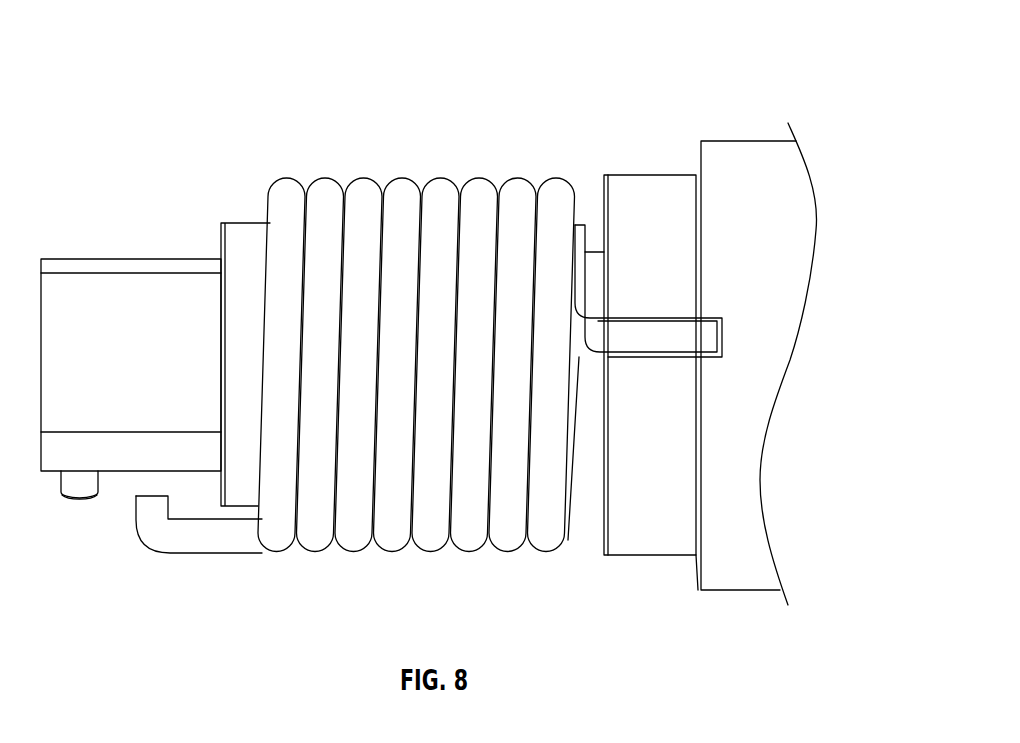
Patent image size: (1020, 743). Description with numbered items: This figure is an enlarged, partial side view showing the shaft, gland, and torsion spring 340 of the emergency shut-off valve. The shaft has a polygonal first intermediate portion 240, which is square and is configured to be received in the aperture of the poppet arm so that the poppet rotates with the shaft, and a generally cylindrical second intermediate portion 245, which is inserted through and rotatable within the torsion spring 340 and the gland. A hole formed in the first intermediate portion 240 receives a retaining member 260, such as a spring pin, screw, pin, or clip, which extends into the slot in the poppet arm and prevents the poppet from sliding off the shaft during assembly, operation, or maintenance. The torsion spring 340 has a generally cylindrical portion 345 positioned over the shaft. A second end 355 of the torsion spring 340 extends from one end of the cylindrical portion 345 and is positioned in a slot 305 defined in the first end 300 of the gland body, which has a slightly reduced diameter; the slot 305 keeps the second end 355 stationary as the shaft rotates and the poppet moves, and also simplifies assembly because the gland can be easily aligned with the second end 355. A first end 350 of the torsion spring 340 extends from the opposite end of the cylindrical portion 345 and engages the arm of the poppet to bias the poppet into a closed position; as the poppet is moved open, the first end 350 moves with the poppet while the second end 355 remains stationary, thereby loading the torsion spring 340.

The torsion spring 340 is at (292, 104).
The first intermediate portion 240 is at (125, 282).
The second intermediate portion 245 is at (247, 232).
The retaining member 260 is at (85, 504).
The first end 350 is at (183, 543).
The cylindrical portion 345 is at (435, 567).
The slot 305 is at (667, 316).
The first end 300 is at (658, 183).
The second end 355 is at (708, 335).